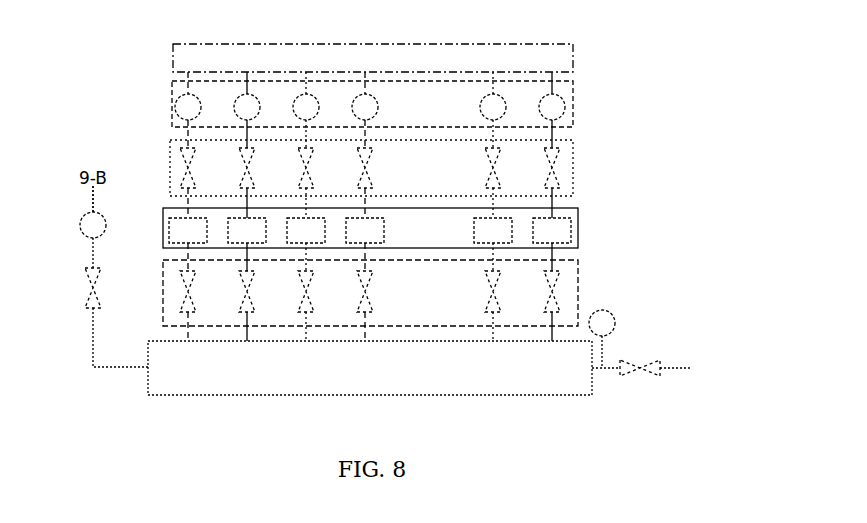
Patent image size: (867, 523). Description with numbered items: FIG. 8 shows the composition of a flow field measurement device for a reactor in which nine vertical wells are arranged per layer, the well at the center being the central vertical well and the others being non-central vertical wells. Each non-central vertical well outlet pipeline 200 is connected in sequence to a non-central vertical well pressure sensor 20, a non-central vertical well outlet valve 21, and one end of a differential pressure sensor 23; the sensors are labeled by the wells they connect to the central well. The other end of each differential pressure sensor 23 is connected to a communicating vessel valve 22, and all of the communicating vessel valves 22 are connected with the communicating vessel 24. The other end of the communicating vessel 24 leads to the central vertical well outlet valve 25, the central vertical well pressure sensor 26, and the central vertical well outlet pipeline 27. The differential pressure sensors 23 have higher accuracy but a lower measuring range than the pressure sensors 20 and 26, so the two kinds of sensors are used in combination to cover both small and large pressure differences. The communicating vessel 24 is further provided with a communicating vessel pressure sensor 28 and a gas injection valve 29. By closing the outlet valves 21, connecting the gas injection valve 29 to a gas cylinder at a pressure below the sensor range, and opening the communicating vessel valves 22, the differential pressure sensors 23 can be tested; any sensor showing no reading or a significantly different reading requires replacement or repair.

The non-central vertical well outlet pipeline 200 is at (575, 56).
The non-central vertical well pressure sensor 20 is at (575, 107).
The non-central vertical well outlet valve 21 is at (575, 174).
The differential pressure sensor 23 is at (580, 235).
The communicating vessel valve 22 is at (580, 288).
The communicating vessel 24 is at (166, 397).
The central vertical well outlet valve 25 is at (82, 286).
The central vertical well pressure sensor 26 is at (79, 217).
The central vertical well outlet pipeline 27 is at (92, 192).
The communicating vessel pressure sensor 28 is at (615, 321).
The gas injection valve 29 is at (654, 360).